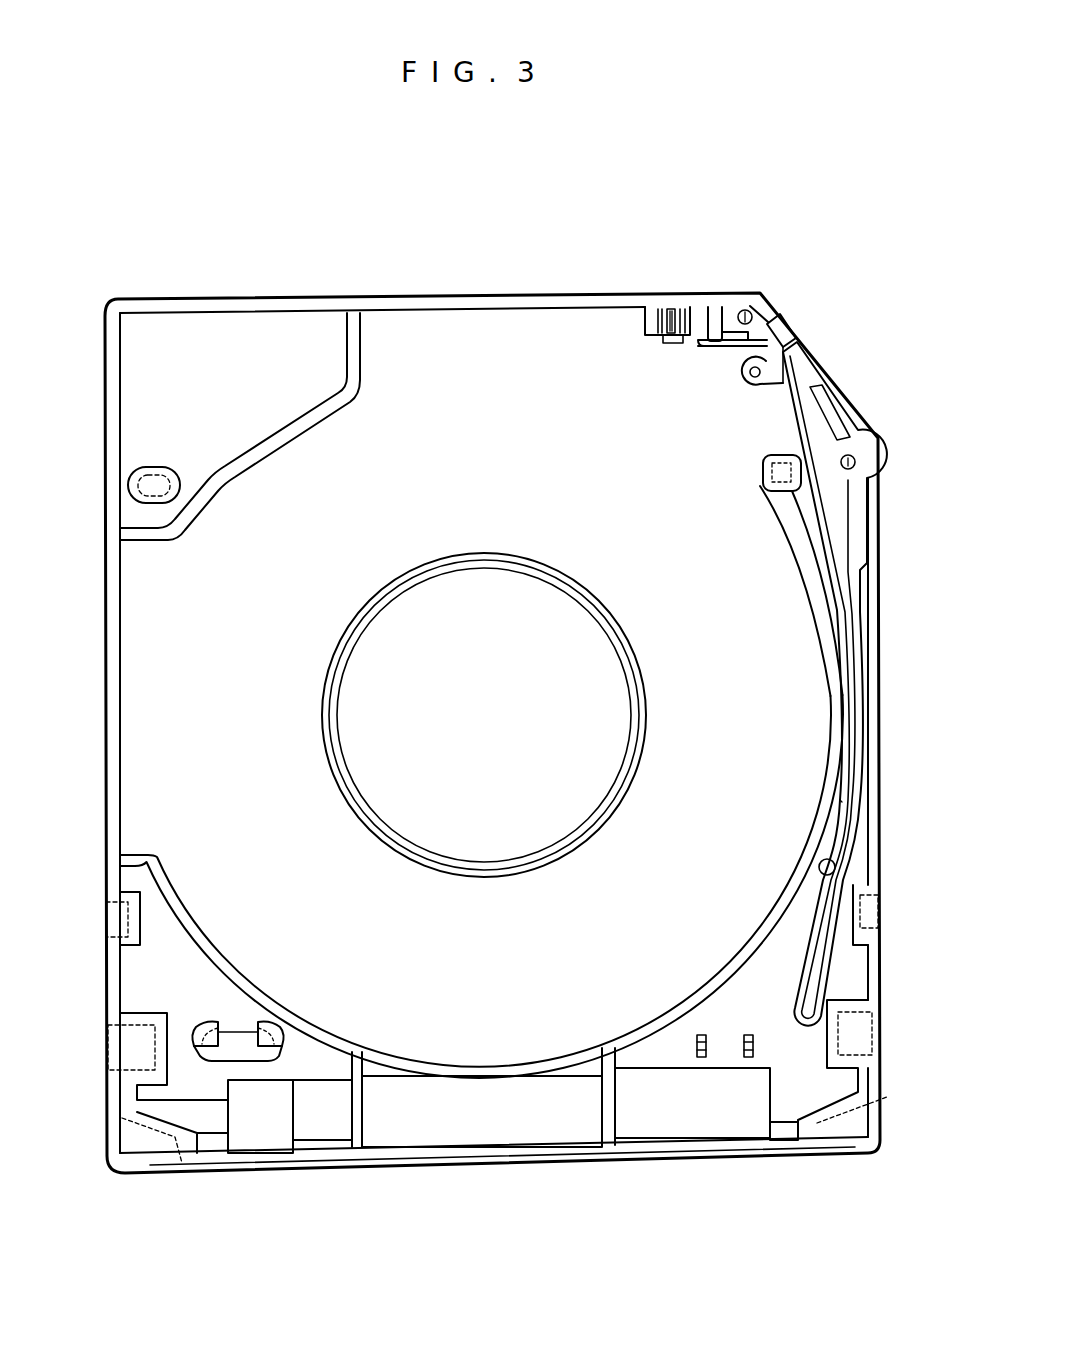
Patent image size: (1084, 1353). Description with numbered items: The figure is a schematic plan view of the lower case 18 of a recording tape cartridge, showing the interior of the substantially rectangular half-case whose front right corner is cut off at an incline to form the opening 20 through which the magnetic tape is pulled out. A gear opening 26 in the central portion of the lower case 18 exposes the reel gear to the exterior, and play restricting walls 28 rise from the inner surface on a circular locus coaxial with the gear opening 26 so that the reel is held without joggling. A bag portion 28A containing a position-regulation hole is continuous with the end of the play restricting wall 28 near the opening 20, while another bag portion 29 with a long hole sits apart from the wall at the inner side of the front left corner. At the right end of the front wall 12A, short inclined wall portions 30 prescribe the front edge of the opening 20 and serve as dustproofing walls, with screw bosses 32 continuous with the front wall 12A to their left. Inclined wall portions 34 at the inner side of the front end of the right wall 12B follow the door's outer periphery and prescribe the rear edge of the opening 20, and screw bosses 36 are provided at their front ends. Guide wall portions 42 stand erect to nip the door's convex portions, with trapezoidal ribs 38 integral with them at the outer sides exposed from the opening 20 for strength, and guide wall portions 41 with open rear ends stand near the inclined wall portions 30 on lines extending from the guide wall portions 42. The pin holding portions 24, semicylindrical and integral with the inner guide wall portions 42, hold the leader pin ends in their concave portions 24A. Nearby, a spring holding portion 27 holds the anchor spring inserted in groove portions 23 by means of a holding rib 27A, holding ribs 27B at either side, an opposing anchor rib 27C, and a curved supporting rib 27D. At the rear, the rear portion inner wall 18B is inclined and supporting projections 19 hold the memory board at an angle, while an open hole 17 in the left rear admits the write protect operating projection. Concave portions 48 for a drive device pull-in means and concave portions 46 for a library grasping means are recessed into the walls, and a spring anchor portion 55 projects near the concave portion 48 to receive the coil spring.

The lower case 18 is at (536, 198).
The front wall 12A is at (412, 297).
The right wall 12B is at (881, 705).
The rear portion inner wall 18B is at (668, 1125).
The spring holding portion 27 is at (643, 371).
The holding rib 27A is at (669, 309).
The holding ribs 27B is at (655, 335).
The anchor rib 27C is at (670, 345).
The supporting rib 27D is at (700, 348).
The groove portions 23 is at (714, 337).
The screw bosses 32 is at (745, 309).
The inclined wall portions 30 is at (772, 322).
The guide wall portions 41 is at (792, 342).
The opening 20 is at (830, 677).
The ribs 38 is at (842, 410).
The screw bosses 36 is at (856, 460).
The pin holding portions 24 is at (732, 399).
The concave portions 24A is at (757, 377).
The bag portion 28A is at (762, 466).
The inclined wall portions 34 is at (852, 537).
The play restricting walls 28 is at (219, 486).
The gear opening 26 is at (443, 578).
The bag portion 29 is at (143, 466).
The concave portion 48 is at (120, 920).
The concave portions 46 is at (140, 1048).
The open hole 17 is at (238, 1040).
The supporting projections 19 is at (748, 1034).
The guide wall portions 42 is at (812, 960).
The spring anchor portion 55 is at (822, 862).